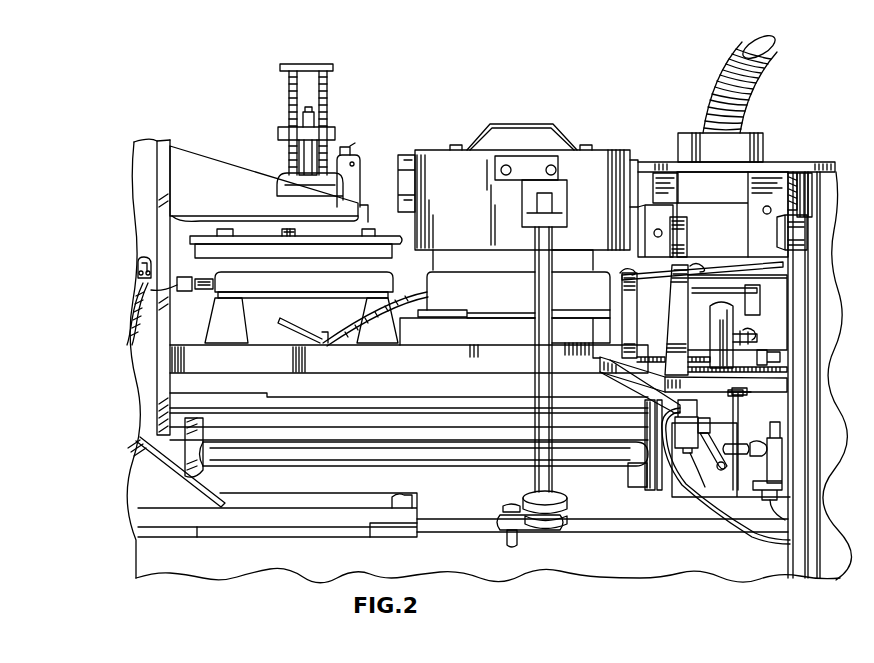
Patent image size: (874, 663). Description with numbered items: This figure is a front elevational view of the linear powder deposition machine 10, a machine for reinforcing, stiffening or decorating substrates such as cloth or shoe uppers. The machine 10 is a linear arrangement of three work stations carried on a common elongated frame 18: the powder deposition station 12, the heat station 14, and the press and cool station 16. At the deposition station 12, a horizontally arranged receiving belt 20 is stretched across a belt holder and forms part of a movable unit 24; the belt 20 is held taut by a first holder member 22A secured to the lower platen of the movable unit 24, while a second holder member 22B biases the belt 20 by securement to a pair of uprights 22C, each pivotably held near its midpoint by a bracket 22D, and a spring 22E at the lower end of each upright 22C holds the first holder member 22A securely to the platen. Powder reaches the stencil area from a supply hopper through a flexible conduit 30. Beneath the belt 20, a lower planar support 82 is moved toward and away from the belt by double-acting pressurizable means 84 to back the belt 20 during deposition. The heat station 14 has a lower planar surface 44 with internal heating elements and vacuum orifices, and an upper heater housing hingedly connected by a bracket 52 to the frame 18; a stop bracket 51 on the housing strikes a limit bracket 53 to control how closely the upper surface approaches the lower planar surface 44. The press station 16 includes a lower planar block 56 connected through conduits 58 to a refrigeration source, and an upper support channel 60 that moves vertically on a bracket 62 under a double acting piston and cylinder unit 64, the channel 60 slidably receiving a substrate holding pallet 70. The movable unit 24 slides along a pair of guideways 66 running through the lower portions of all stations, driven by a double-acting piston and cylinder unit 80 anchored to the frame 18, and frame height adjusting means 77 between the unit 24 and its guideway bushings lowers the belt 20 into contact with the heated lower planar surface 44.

The linear powder deposition machine 10 is at (647, 119).
The powder deposition station 12 is at (829, 147).
The heat station 14 is at (433, 160).
The press and cool station 16 is at (367, 154).
The elongated frame 18 is at (167, 383).
The receiving belt 20 is at (738, 258).
The first holder member 22A is at (636, 270).
The second holder member 22B is at (700, 268).
The uprights 22C is at (628, 292).
The bracket 22D is at (681, 337).
The spring 22E is at (758, 373).
The movable unit 24 is at (613, 329).
The flexible conduit 30 is at (749, 95).
The lower planar surface 44 is at (433, 286).
The stop bracket 51 is at (559, 168).
The bracket 52 is at (432, 266).
The limit bracket 53 is at (567, 199).
The lower planar block 56 is at (338, 285).
The conduits 58 is at (176, 296).
The upper support channel 60 is at (191, 244).
The bracket 62 is at (220, 172).
The double acting piston and cylinder unit 64 is at (293, 153).
The guideways 66 is at (350, 460).
The substrate holding pallet 70 is at (303, 258).
The frame height adjusting means 77 is at (611, 383).
The double-acting piston and cylinder unit 80 is at (268, 393).
The lower planar support 82 is at (745, 290).
The double-acting pressurizable means 84 is at (748, 335).